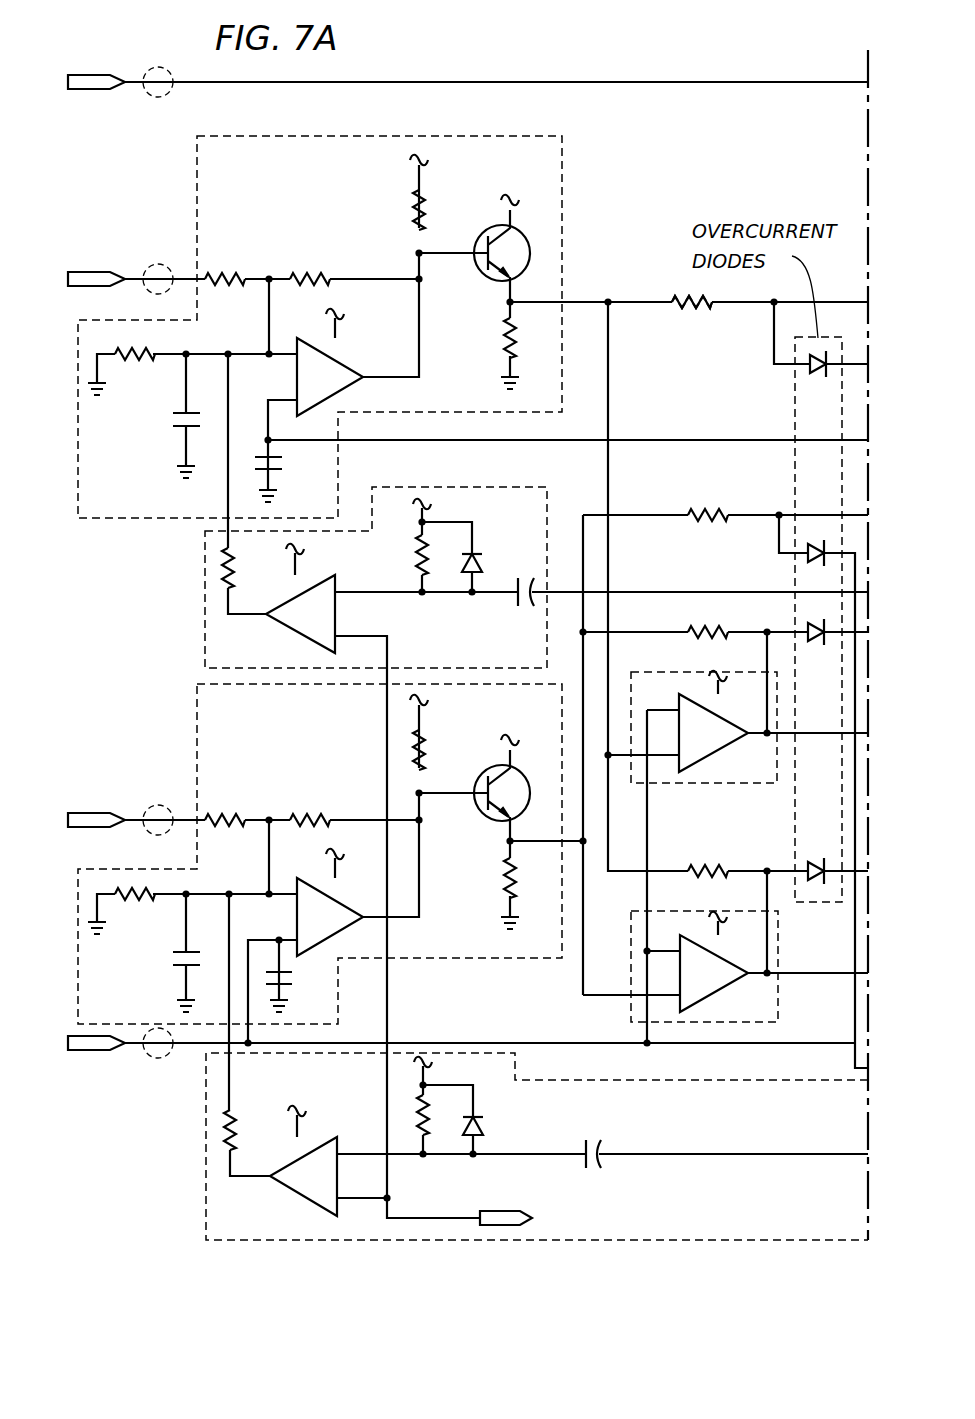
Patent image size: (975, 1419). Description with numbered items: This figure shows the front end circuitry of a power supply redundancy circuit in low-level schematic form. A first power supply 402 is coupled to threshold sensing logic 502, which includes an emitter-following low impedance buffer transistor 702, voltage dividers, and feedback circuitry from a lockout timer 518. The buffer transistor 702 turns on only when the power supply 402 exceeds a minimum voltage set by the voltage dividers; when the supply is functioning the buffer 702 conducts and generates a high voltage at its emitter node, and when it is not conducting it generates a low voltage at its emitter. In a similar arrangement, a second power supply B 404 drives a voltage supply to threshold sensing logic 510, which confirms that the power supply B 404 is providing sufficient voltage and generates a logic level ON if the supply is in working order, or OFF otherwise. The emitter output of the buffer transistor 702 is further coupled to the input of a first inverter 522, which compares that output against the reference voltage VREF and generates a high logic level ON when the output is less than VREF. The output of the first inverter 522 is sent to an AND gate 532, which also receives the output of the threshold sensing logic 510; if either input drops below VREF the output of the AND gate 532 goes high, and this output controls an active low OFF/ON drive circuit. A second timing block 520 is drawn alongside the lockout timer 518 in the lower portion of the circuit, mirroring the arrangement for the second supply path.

The power supply 402 is at (155, 264).
The power supply B 404 is at (155, 806).
The threshold sensing logic 502 is at (527, 136).
The threshold sensing logic 510 is at (195, 720).
The lockout timer 518 is at (503, 487).
The second comparator circuit 520 is at (204, 1167).
The first inverter 522 is at (693, 672).
The AND gate 532 is at (728, 911).
The emitter-following low impedance buffer transistor 702 is at (514, 213).